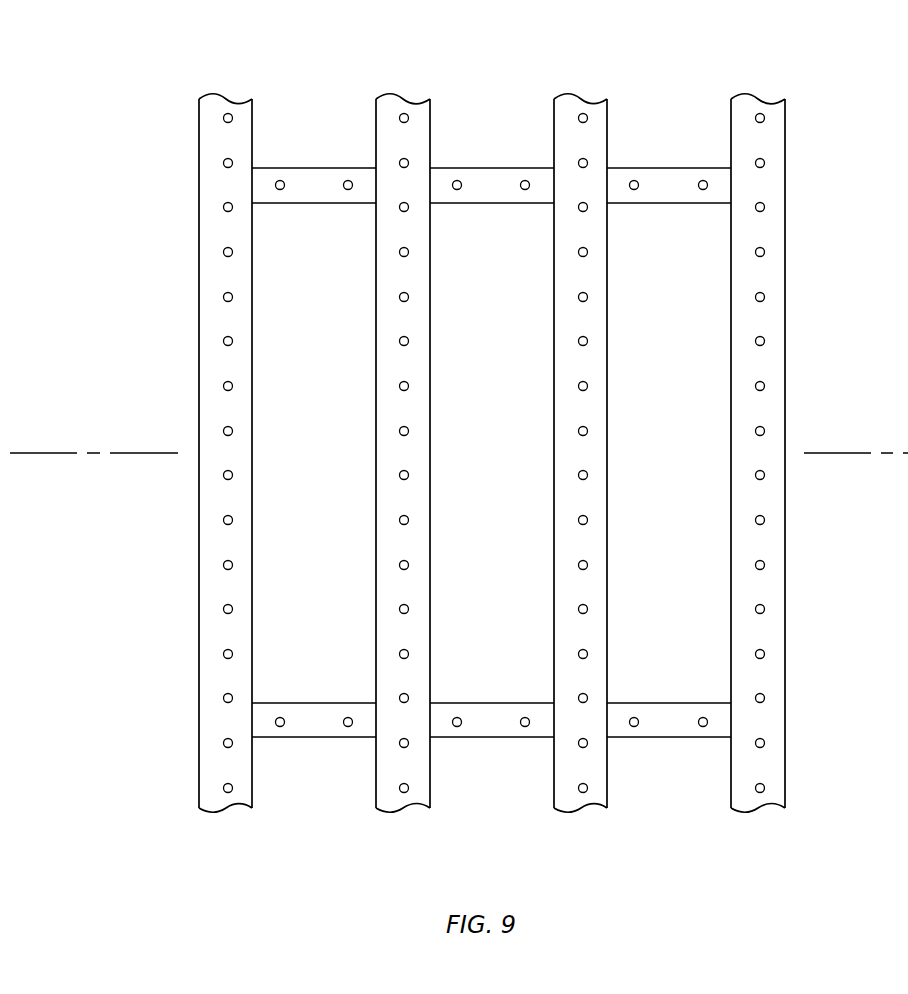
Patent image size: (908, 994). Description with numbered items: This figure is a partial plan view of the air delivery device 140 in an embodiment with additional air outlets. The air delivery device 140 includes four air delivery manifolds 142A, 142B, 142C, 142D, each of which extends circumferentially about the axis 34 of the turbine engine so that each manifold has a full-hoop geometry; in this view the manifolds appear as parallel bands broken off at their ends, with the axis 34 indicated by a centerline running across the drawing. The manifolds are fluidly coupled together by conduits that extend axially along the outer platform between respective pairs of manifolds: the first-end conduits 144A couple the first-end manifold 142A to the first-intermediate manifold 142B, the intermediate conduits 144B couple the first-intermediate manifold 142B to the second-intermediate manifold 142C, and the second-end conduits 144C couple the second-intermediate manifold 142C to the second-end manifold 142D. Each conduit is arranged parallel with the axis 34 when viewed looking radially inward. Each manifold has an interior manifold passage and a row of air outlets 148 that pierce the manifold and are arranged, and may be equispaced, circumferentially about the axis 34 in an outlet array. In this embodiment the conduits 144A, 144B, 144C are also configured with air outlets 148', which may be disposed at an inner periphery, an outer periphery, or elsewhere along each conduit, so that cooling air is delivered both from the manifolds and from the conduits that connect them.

The axis 34 is at (24, 455).
The air delivery device 140 is at (815, 89).
The first-end manifold 142A is at (198, 783).
The first-intermediate manifold 142B is at (375, 786).
The second-intermediate manifold 142C is at (553, 786).
The second-end manifold 142D is at (730, 786).
The first-end conduit 144A is at (330, 167).
The intermediate conduit 144B is at (484, 167).
The second-end conduit 144C is at (670, 167).
The air outlet 148 is at (494, 453).
The air outlet 148' is at (492, 454).